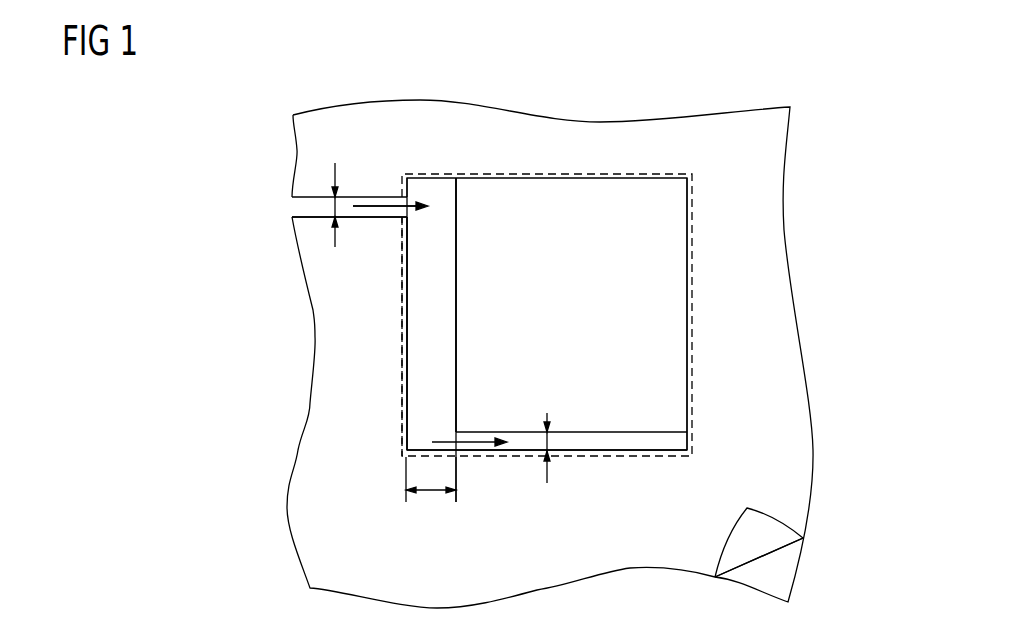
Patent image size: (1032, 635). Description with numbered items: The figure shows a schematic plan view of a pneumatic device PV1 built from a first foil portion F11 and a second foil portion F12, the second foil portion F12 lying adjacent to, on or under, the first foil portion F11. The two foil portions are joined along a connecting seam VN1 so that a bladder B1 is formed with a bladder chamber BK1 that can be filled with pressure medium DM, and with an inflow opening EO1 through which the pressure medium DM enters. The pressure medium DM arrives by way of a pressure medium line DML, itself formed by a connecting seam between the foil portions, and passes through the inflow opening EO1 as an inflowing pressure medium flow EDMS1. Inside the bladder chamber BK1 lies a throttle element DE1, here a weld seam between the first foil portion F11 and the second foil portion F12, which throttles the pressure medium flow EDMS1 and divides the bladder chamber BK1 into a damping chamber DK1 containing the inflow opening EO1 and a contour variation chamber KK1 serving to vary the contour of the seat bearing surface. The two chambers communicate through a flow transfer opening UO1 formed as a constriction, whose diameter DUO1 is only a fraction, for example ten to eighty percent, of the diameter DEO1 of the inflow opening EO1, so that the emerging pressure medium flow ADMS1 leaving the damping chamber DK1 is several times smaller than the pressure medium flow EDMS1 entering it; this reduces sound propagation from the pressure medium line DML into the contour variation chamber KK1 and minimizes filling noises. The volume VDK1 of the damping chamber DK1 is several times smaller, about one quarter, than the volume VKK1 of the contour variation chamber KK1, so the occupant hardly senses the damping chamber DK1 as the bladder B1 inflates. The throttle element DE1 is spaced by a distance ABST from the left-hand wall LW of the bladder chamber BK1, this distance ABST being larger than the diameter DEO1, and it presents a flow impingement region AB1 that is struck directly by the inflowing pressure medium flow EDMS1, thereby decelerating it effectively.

The pneumatic device PV1 is at (270, 100).
The bladder B1 is at (709, 217).
The contour variation chamber KK1 is at (692, 360).
The volume of the contour variation chamber VKK1 is at (667, 402).
The connecting seam VN1 is at (690, 232).
The bladder chamber BK1 is at (631, 296).
The throttle element DE1 is at (457, 302).
The flow impingement region AB1 is at (448, 200).
The volume of the damping chamber VDK1 is at (428, 407).
The left-hand wall LW is at (405, 333).
The damping chamber DK1 is at (402, 375).
The inflow opening EO1 is at (405, 197).
The pressure medium DM is at (290, 207).
The diameter of the inflow opening DEO1 is at (335, 173).
The pressure medium line DML is at (318, 218).
The pressure medium flow EDMS1 is at (373, 217).
The flow transfer opening UO1 is at (445, 433).
The emerging pressure medium flow ADMS1 is at (473, 442).
The diameter of the flow transfer opening DUO1 is at (547, 440).
The distance ABST is at (430, 490).
The second foil portion F12 is at (758, 530).
The first foil portion F11 is at (783, 572).